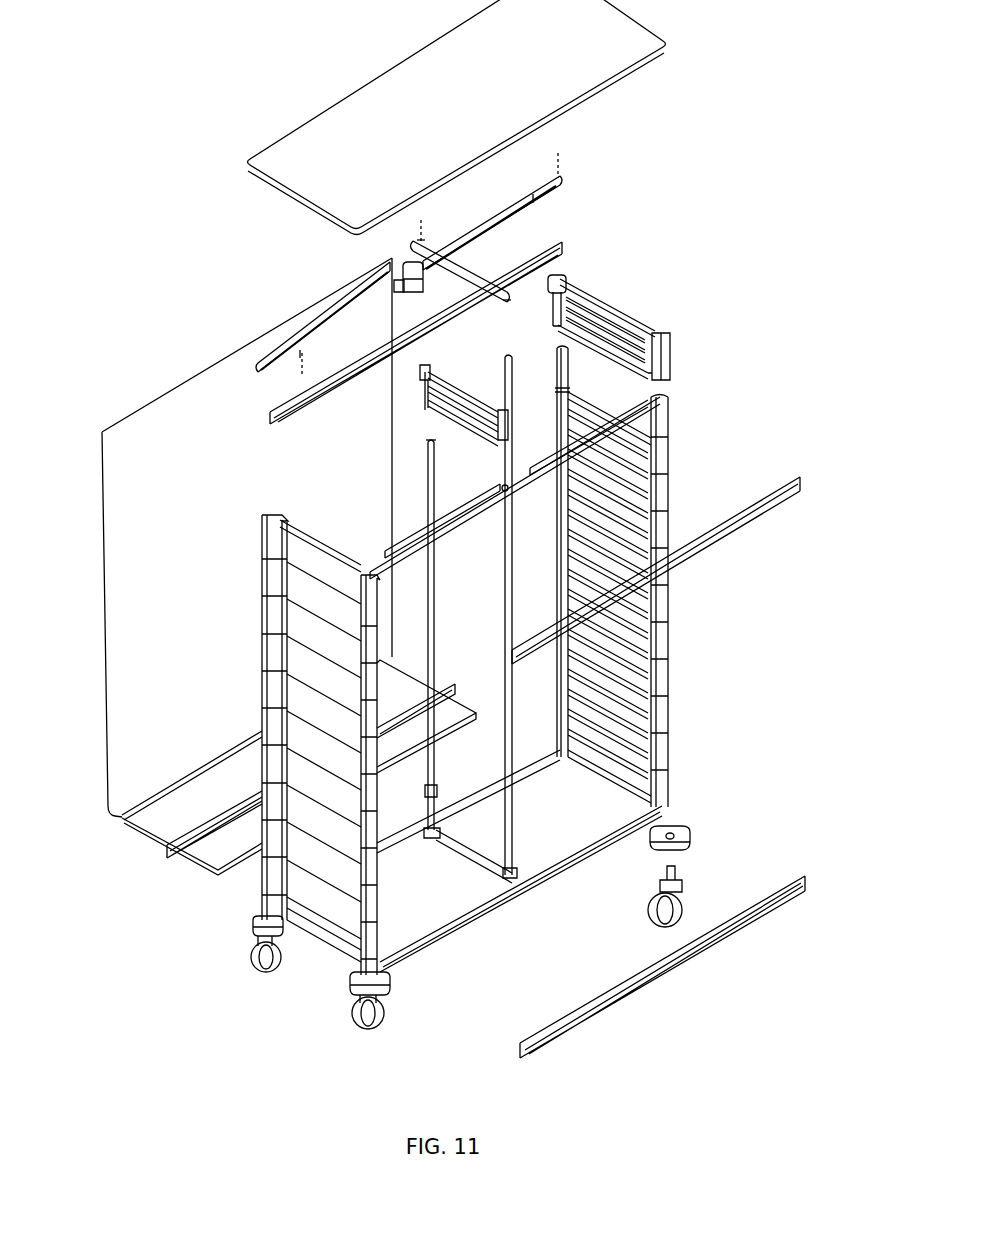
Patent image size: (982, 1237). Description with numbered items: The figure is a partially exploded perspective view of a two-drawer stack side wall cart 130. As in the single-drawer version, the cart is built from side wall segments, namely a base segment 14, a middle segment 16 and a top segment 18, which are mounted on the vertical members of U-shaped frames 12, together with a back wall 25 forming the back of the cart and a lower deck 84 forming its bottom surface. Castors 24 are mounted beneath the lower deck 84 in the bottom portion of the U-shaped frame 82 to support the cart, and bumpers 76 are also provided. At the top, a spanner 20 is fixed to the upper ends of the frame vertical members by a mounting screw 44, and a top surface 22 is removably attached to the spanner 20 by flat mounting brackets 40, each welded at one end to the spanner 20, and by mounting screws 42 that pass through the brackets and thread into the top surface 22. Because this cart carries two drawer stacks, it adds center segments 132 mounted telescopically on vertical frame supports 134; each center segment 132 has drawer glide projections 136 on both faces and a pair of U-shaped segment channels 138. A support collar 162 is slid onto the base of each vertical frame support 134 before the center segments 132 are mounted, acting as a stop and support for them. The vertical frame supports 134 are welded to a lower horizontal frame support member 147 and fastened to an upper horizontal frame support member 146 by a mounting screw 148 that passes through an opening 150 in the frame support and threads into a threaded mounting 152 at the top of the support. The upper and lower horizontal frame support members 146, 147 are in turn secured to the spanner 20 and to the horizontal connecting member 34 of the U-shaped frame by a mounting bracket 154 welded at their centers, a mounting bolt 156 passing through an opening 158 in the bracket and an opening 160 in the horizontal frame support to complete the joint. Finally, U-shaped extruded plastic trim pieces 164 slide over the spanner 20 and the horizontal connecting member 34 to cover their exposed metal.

The U-shaped frame 12 is at (389, 828).
The base segment 14 is at (309, 912).
The middle segment 16 is at (309, 612).
The top segment 18 is at (672, 350).
The spanner 20 is at (565, 183).
The top surface 22 is at (446, 117).
The castors 24 is at (250, 955).
The back wall 25 is at (179, 506).
The horizontal connecting member 34 is at (535, 773).
The mounting bracket 40 is at (523, 213).
The mounting screw 42 is at (302, 375).
The mounting screw 44 is at (562, 152).
The bumpers 76 is at (252, 925).
The U-shaped frame 82 is at (688, 811).
The lower deck 84 is at (213, 809).
The two-drawer stack side wall cart 130 is at (273, 1000).
The center segments 132 is at (460, 380).
The vertical frame supports 134 is at (436, 600).
The drawer glide projections 136 is at (422, 404).
The segment channels 138 is at (500, 400).
The upper horizontal frame support member 146 is at (470, 267).
The lower horizontal frame support member 147 is at (462, 865).
The mounting screw 148 is at (421, 217).
The opening in the horizontal frame support 150 is at (428, 240).
The threaded mounting 152 is at (427, 437).
The mounting bracket 154 is at (411, 263).
The mounting bolt 156 is at (402, 273).
The opening in the mounting bracket 158 is at (503, 485).
The opening in the horizontal frame support 160 is at (503, 303).
The support collar 162 is at (435, 785).
The trim pieces 164 is at (166, 852).